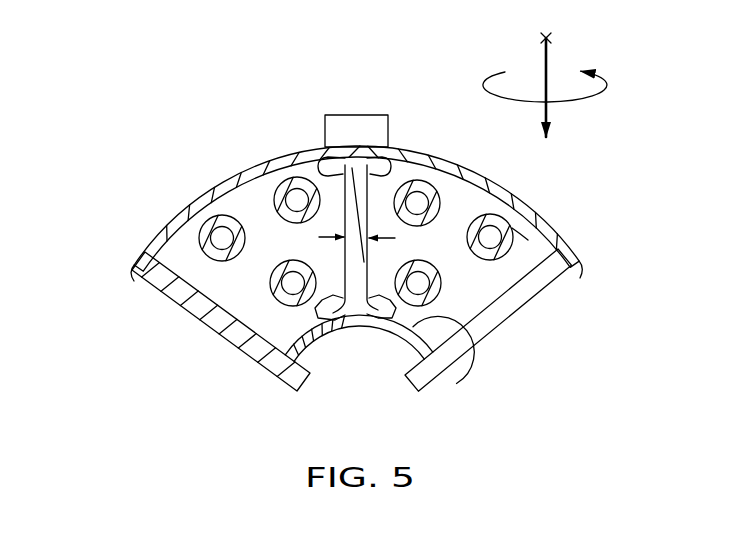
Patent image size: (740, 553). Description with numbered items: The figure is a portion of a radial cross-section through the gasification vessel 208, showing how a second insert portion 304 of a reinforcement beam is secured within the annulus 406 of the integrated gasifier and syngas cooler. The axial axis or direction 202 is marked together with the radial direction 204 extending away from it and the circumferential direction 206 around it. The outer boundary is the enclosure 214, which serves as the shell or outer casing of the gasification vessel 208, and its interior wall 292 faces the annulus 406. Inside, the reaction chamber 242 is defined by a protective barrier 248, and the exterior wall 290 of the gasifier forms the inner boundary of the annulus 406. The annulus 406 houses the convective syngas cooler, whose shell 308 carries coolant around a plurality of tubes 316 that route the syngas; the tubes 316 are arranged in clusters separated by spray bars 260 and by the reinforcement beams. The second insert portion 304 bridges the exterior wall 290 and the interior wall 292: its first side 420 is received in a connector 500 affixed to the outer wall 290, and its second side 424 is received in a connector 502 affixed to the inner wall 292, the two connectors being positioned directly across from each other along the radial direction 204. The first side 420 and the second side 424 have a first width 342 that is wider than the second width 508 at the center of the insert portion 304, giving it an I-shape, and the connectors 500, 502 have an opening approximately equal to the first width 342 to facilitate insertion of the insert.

The gasification vessel 208 is at (118, 70).
The axial axis 202 is at (551, 38).
The radial axis 204 is at (543, 62).
The circumferential axis 206 is at (580, 98).
The enclosure 214 is at (518, 193).
The inner wall of the enclosure 292 is at (520, 222).
The first width 342 is at (357, 114).
The connector 502 is at (323, 152).
The second insert portion 304 is at (376, 185).
The second side 424 is at (358, 163).
The second width 508 is at (395, 238).
The tubes 316 is at (274, 200).
The annulus 406 is at (243, 288).
The spray bars 260 is at (492, 334).
The shell 308 is at (490, 284).
The reaction chamber 242 is at (372, 383).
The first side 420 is at (336, 312).
The connector 500 is at (323, 306).
The protective barrier 248 is at (365, 314).
The outer wall of the gasifier 290 is at (456, 384).